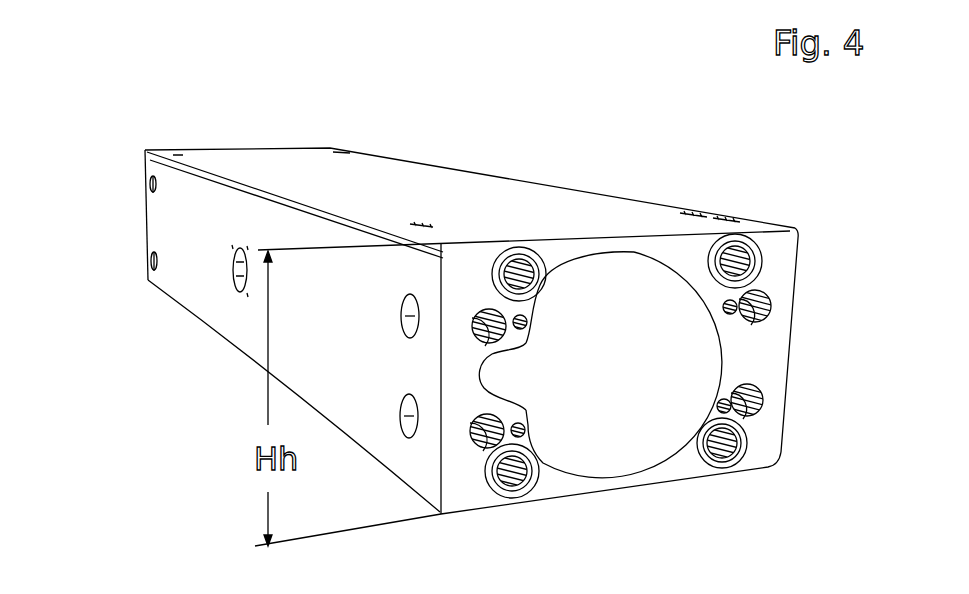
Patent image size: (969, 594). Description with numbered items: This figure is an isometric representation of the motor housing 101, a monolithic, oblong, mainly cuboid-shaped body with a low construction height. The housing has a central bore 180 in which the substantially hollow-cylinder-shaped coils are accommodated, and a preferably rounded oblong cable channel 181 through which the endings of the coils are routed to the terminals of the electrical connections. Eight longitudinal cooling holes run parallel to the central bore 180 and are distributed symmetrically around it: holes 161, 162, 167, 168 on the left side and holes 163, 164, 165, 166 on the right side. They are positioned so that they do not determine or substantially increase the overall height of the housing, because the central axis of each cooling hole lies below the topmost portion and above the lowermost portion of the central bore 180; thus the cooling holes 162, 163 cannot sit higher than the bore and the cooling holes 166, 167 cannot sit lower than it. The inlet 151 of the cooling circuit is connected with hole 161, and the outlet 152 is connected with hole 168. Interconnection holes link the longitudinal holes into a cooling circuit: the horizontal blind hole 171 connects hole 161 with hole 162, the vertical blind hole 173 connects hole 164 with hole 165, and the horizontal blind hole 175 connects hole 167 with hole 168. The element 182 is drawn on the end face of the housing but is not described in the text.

The motor housing 101 is at (236, 142).
The inlet 151 is at (408, 322).
The outlet 152 is at (407, 421).
The longitudinal cooling hole 161 is at (485, 320).
The longitudinal cooling hole 162 is at (537, 273).
The longitudinal cooling hole 163 is at (727, 262).
The longitudinal cooling hole 164 is at (760, 302).
The longitudinal cooling hole 165 is at (762, 403).
The longitudinal cooling hole 166 is at (721, 446).
The longitudinal cooling hole 167 is at (520, 480).
The longitudinal cooling hole 168 is at (482, 443).
The horizontal blind hole 171 is at (150, 188).
The vertical blind hole 173 is at (733, 222).
The horizontal blind hole 175 is at (153, 258).
The central bore 180 is at (647, 435).
The cable channel 181 is at (490, 394).
The opening in end face 182 is at (237, 288).